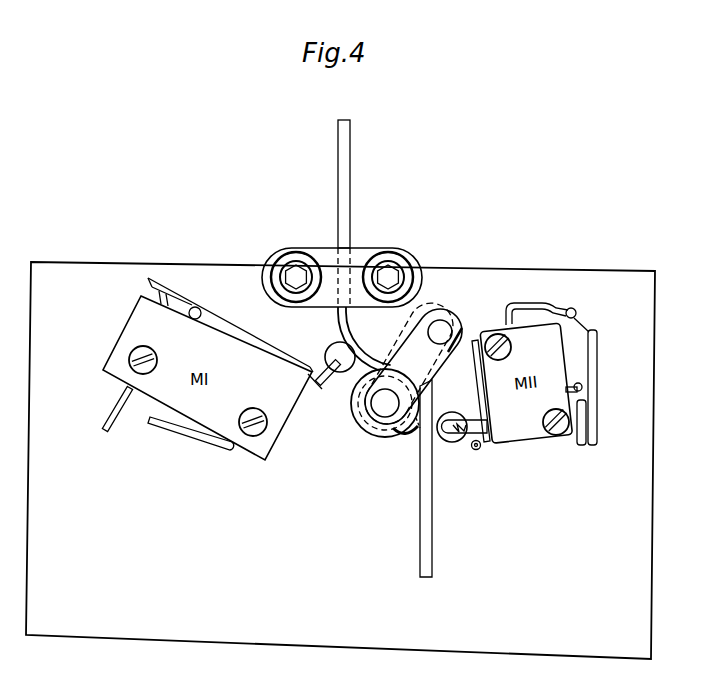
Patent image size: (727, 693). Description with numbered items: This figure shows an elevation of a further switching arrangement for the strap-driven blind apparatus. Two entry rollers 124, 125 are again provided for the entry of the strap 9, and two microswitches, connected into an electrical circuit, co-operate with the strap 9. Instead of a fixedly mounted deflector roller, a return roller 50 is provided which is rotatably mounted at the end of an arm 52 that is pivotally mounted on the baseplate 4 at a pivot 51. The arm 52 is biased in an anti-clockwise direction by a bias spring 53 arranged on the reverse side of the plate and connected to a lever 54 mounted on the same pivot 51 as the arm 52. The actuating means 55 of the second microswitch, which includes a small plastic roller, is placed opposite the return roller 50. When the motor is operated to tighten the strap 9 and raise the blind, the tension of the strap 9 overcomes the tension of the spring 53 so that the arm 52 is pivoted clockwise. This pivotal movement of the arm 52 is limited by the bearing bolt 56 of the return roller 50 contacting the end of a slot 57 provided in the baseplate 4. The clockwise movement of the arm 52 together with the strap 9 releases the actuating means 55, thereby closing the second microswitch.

The baseplate 4 is at (613, 287).
The strap 9 is at (351, 158).
The entry roller 124 is at (291, 246).
The entry roller 125 is at (398, 246).
The return roller 50 is at (365, 403).
The pivot 51 is at (440, 320).
The arm 52 is at (445, 308).
The bias spring 53 is at (481, 449).
The lever 54 is at (466, 326).
The actuating means 55 is at (452, 443).
The bearing bolt 56 is at (375, 407).
The slot 57 is at (407, 433).